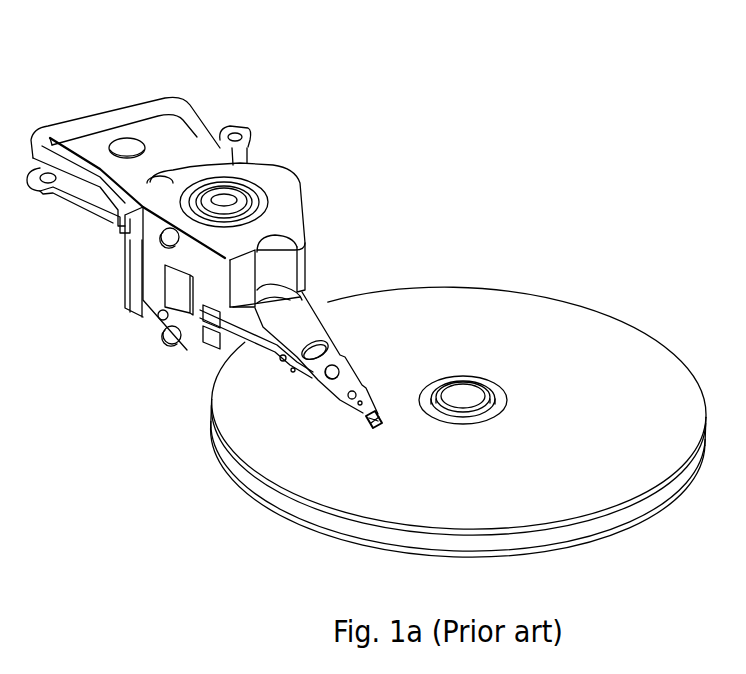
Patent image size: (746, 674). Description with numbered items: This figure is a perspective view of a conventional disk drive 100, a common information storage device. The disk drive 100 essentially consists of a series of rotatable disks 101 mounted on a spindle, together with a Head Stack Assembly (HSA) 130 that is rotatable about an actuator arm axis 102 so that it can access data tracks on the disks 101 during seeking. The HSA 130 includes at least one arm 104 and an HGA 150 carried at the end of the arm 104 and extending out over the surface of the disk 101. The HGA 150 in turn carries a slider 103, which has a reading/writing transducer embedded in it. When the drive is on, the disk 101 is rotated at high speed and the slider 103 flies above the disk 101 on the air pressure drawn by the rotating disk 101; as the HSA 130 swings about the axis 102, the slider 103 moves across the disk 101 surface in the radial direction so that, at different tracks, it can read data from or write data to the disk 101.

The disk drive 100 is at (95, 26).
The disk 101 is at (525, 345).
The actuator arm axis 102 is at (226, 200).
The slider 103 is at (373, 410).
The arm 104 is at (312, 333).
The Head Stack Assembly (HSA) 130 is at (295, 232).
The HGA 150 is at (347, 377).